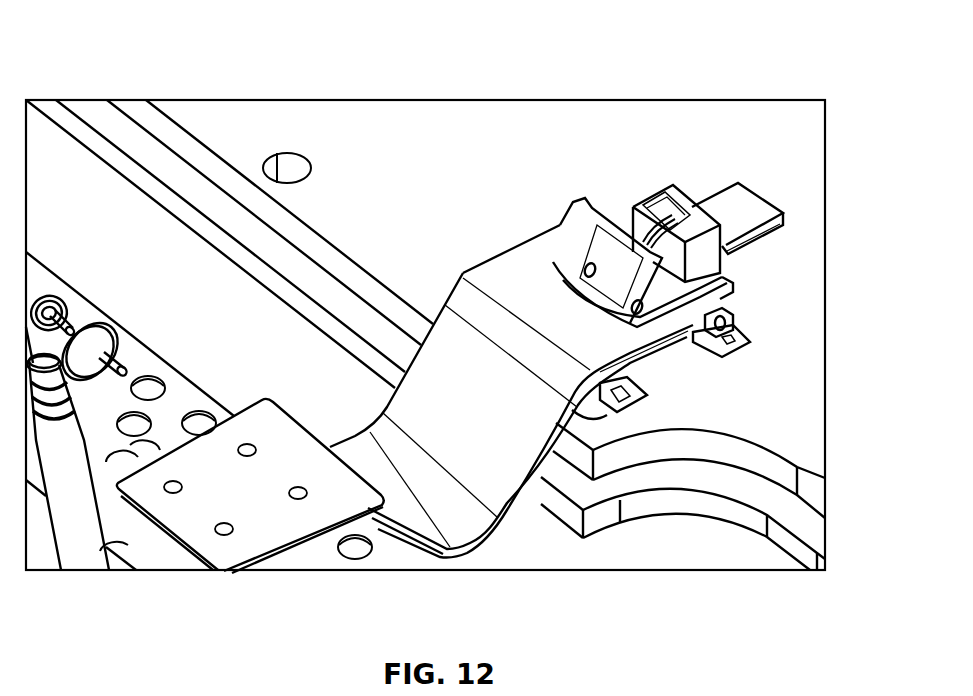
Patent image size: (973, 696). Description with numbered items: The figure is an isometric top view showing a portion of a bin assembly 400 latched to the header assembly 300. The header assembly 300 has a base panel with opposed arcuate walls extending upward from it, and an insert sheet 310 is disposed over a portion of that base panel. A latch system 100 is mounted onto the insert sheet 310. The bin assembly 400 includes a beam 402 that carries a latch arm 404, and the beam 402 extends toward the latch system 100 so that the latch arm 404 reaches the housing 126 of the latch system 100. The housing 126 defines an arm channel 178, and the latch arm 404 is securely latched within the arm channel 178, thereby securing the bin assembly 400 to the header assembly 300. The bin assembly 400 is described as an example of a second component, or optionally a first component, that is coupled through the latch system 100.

The latch system 100 is at (673, 181).
The housing 126 is at (692, 205).
The arm channel 178 is at (642, 232).
The header assembly 300 is at (830, 161).
The insert sheet 310 is at (800, 386).
The bin assembly 400 is at (143, 537).
The beam 402 is at (510, 513).
The latch arm 404 is at (775, 215).